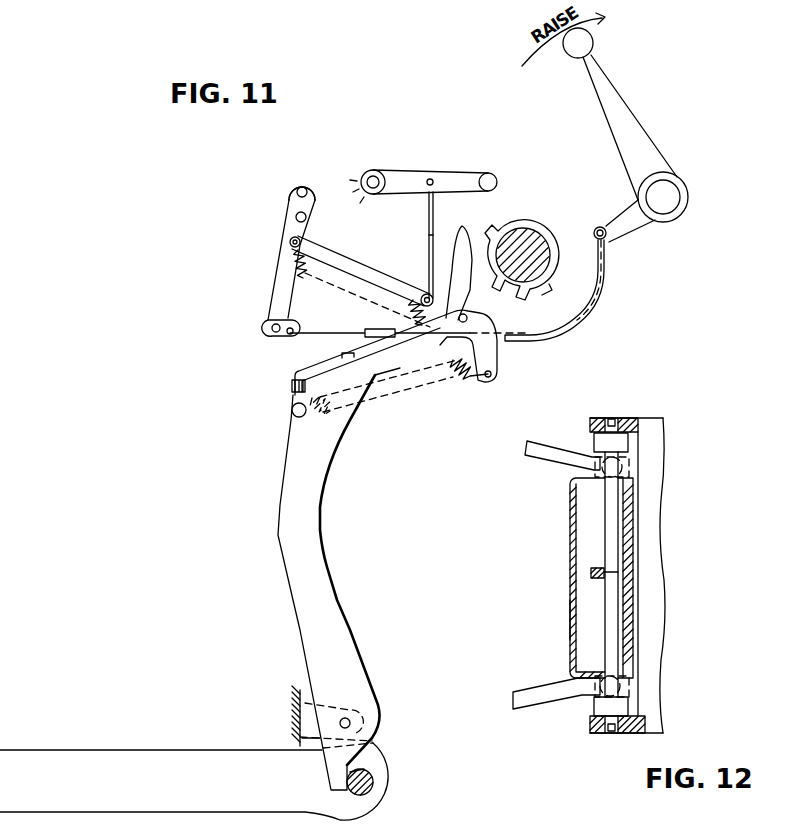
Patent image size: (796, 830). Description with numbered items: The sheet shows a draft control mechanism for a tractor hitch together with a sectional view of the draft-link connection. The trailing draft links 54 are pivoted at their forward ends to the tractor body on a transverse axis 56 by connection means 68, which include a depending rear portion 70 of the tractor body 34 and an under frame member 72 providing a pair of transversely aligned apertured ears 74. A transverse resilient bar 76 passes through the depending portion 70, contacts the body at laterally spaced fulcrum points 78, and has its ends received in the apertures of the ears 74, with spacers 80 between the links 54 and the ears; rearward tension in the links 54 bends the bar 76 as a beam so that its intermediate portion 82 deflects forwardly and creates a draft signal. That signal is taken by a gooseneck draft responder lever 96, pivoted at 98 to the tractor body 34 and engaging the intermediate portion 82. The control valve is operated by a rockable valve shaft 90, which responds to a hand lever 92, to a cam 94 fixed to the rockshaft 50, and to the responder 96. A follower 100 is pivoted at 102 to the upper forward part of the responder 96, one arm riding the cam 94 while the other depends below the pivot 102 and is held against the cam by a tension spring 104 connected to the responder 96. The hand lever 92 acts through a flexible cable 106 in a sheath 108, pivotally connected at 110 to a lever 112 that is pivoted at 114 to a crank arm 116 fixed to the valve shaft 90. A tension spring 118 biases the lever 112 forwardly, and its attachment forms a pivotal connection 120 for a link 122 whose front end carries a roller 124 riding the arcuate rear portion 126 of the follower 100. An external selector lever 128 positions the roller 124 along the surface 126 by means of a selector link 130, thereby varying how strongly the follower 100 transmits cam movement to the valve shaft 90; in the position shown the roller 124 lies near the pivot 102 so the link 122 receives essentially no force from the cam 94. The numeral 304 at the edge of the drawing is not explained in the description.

In FIG. 11, the tractor body 34 is at (296, 722).
In FIG. 12, the tractor body 34 is at (570, 530).
In FIG. 11, the rockshaft 50 is at (540, 242).
In FIG. 11, the draft links 54 is at (100, 749).
In FIG. 12, the draft links 54 is at (513, 700).
In FIG. 12, the transverse axis 56 is at (616, 733).
In FIG. 12, the connection means 68 is at (647, 406).
In FIG. 12, the depending rear portion 70 is at (570, 622).
In FIG. 12, the under frame member 72 is at (658, 545).
In FIG. 12, the apertured ears 74 is at (596, 733).
In FIG. 11, the transverse resilient bar 76 is at (374, 782).
In FIG. 12, the transverse resilient bar 76 is at (612, 512).
In FIG. 12, the fulcrum points 78 is at (626, 673).
In FIG. 12, the spacers 80 is at (630, 706).
In FIG. 11, the intermediate portion 82 is at (369, 771).
In FIG. 12, the intermediate portion 82 is at (619, 572).
In FIG. 11, the valve shaft 90 is at (302, 186).
In FIG. 11, the hand lever 92 is at (598, 66).
In FIG. 11, the cam 94 is at (498, 225).
In FIG. 11, the draft responder lever 96 is at (280, 555).
In FIG. 12, the draft responder lever 96 is at (591, 572).
In FIG. 11, the pivot 98 is at (350, 720).
In FIG. 11, the follower 100 is at (465, 234).
In FIG. 11, the pivot 102 is at (466, 312).
In FIG. 11, the tension spring 104 is at (464, 382).
In FIG. 11, the flexible cable 106 is at (607, 240).
In FIG. 11, the sheath 108 is at (628, 292).
In FIG. 11, the pivotal connection 110 is at (277, 336).
In FIG. 11, the lever 112 is at (274, 297).
In FIG. 11, the pivot 114 is at (296, 217).
In FIG. 11, the crank arm 116 is at (290, 196).
In FIG. 11, the tension spring 118 is at (299, 273).
In FIG. 11, the pivotal connection 120 is at (289, 242).
In FIG. 11, the link 122 is at (346, 262).
In FIG. 11, the roller 124 is at (424, 285).
In FIG. 11, the arcuate rear portion 126 is at (429, 245).
In FIG. 11, the selector lever 128 is at (458, 176).
In FIG. 11, the selector link 130 is at (428, 207).
In FIG. 11, the panel 304 is at (300, 826).